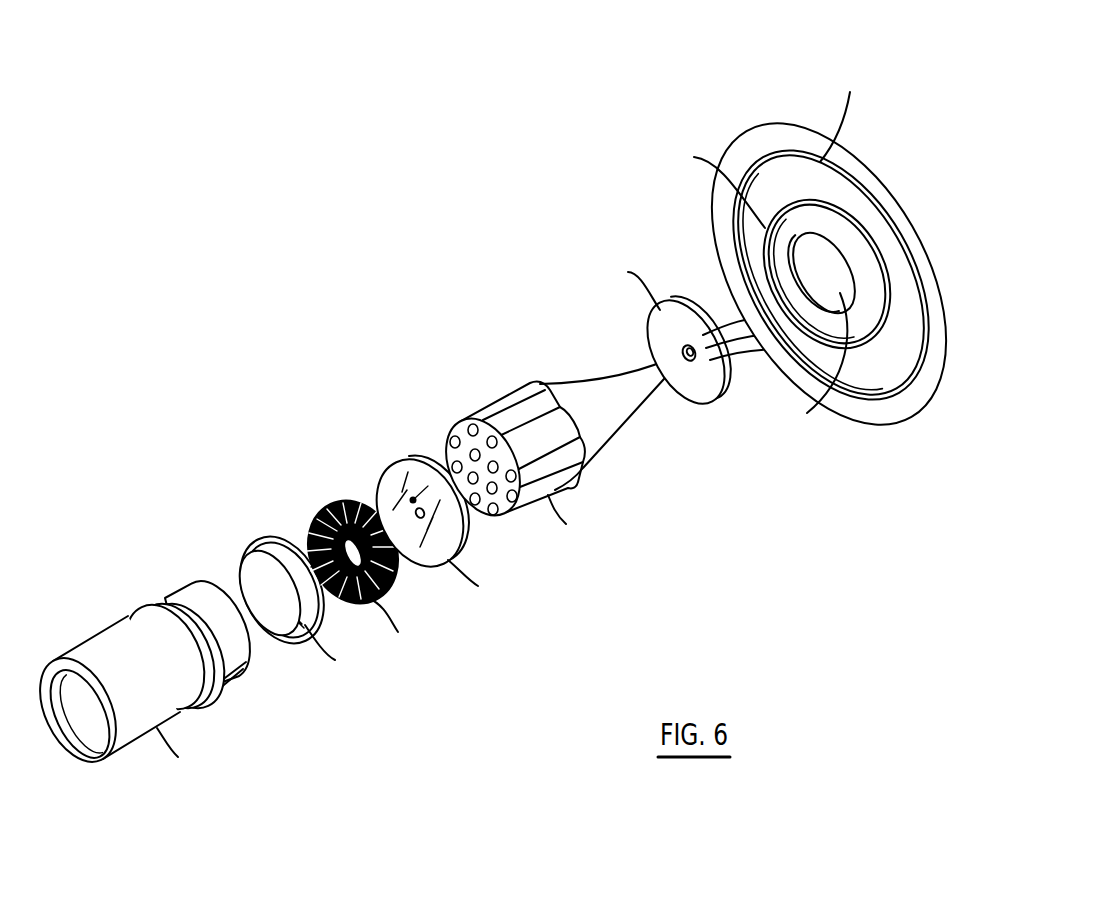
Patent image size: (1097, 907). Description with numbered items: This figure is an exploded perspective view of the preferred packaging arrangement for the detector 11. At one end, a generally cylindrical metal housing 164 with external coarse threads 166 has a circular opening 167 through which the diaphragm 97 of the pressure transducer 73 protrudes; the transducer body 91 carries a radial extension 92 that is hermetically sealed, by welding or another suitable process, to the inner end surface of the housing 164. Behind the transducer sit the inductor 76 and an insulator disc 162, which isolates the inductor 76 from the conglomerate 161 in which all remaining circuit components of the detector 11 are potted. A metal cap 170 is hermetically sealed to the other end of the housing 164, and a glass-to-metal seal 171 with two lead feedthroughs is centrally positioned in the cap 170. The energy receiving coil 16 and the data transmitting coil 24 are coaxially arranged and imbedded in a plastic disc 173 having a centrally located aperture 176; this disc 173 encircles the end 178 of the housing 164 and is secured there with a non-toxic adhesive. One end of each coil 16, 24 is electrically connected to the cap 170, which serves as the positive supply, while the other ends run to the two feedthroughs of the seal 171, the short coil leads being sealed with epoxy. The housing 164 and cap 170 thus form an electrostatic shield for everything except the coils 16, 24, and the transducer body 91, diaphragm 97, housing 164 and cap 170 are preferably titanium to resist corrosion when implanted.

The detector 11 is at (362, 380).
The energy receiving coil 16 is at (847, 180).
The data transmitting coil 24 is at (777, 207).
The pressure transducer 73 is at (322, 597).
The inductor 76 is at (332, 508).
The transducer body 91 is at (257, 562).
The radial extension 92 is at (298, 643).
The diaphragm 97 is at (240, 590).
The conglomerate 161 is at (470, 426).
The insulator disc 162 is at (398, 478).
The metal housing 164 is at (170, 669).
The external coarse threads 166 is at (147, 605).
The circular opening 167 is at (92, 730).
The metal cap 170 is at (586, 343).
The glass-to-metal seal 171 is at (687, 343).
The plastic disc 173 is at (782, 242).
The centrally located aperture 176 is at (807, 413).
The end of housing 178 is at (178, 590).